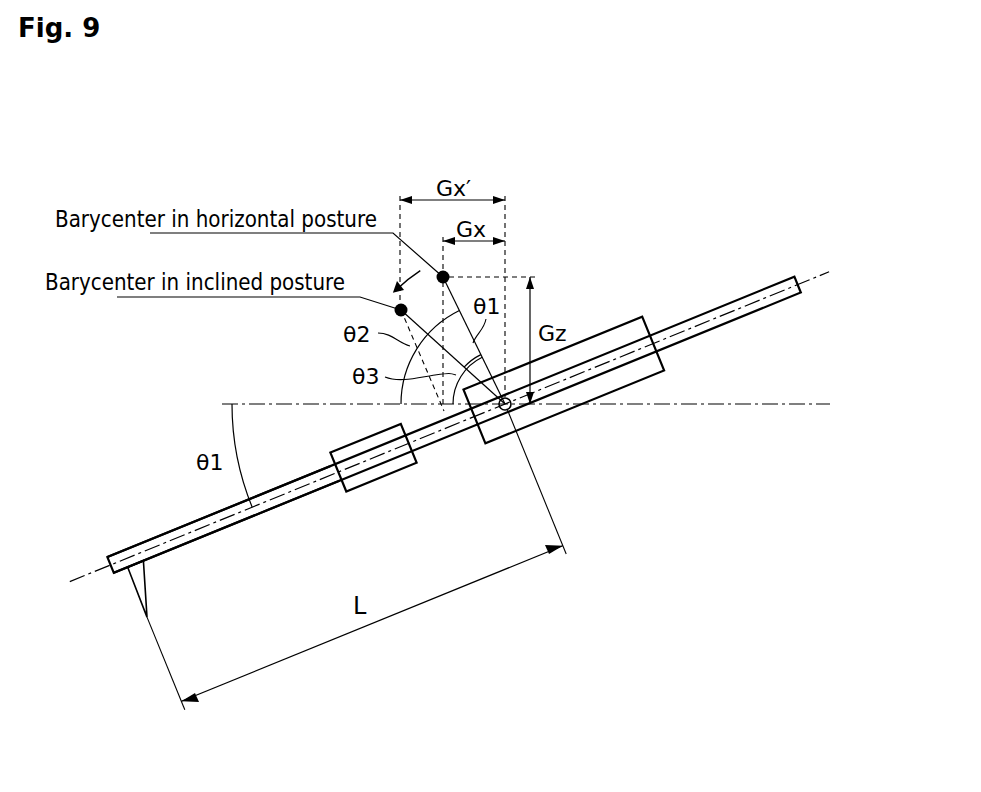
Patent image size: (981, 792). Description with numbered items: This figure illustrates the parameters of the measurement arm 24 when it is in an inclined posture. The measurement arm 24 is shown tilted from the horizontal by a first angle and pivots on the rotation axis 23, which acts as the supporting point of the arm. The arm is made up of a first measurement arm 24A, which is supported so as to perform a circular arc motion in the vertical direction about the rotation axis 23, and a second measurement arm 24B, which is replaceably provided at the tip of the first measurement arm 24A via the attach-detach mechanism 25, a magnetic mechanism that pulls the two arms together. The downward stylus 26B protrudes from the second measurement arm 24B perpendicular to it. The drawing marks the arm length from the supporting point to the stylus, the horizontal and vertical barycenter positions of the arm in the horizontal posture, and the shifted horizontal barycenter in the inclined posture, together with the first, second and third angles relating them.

The measurement arm 24 is at (648, 225).
The first measurement arm 24A is at (627, 386).
The second measurement arm 24B is at (230, 526).
The attach-detach mechanism 25 is at (397, 471).
The rotation axis 23 is at (505, 411).
The downward stylus 26B is at (131, 587).